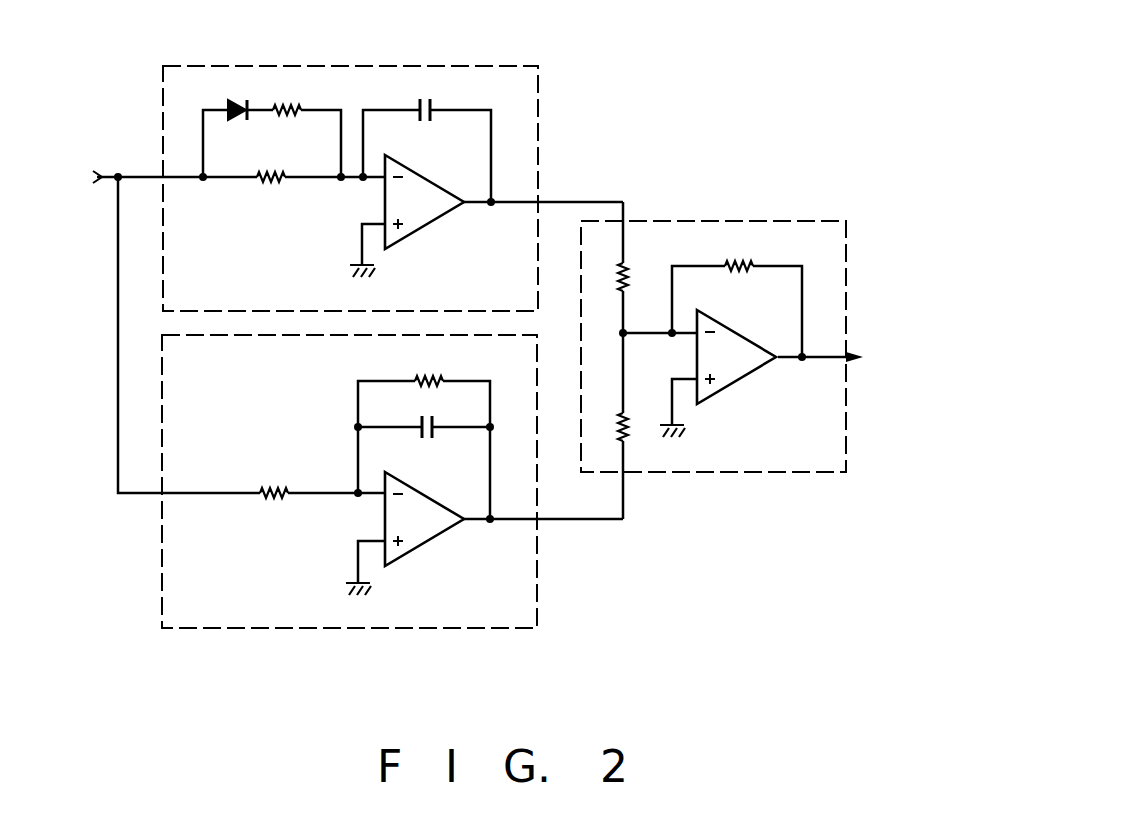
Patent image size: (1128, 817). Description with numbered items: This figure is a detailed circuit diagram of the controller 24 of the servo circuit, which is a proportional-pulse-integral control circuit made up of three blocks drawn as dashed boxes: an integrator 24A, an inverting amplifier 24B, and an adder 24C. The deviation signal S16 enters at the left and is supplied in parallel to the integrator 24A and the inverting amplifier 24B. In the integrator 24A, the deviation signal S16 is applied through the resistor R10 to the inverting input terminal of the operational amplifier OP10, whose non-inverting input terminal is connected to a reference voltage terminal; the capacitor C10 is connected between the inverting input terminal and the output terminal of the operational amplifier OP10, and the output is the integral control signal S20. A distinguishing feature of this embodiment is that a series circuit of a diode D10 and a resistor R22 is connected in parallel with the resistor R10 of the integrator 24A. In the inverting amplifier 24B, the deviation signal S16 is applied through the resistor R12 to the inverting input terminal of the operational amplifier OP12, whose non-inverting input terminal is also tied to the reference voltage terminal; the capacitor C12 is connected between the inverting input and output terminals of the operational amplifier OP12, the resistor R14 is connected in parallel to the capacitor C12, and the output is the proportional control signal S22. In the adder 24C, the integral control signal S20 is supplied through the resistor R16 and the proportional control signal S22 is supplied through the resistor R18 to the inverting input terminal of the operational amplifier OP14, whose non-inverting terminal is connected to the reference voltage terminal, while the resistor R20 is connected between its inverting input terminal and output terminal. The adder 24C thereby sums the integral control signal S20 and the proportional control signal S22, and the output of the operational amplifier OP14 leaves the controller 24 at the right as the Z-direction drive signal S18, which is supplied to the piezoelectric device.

The controller 24 is at (460, 731).
The integrator 24A is at (540, 110).
The inverting amplifier 24B is at (538, 628).
The adder 24C is at (645, 472).
The deviation signal S16 is at (86, 177).
The Z-direction drive signal S18 is at (858, 349).
The integral control signal S20 is at (604, 202).
The proportional control signal S22 is at (585, 520).
The diode D10 is at (237, 118).
The resistor R10 is at (272, 184).
The resistor R22 is at (291, 117).
The capacitor C10 is at (426, 122).
The operational amplifier OP10 is at (433, 224).
The resistor R12 is at (277, 489).
The resistor R14 is at (433, 377).
The capacitor C12 is at (424, 414).
The operational amplifier OP12 is at (428, 548).
The resistor R16 is at (648, 273).
The resistor R18 is at (619, 434).
The resistor R20 is at (720, 267).
The operational amplifier OP14 is at (740, 388).